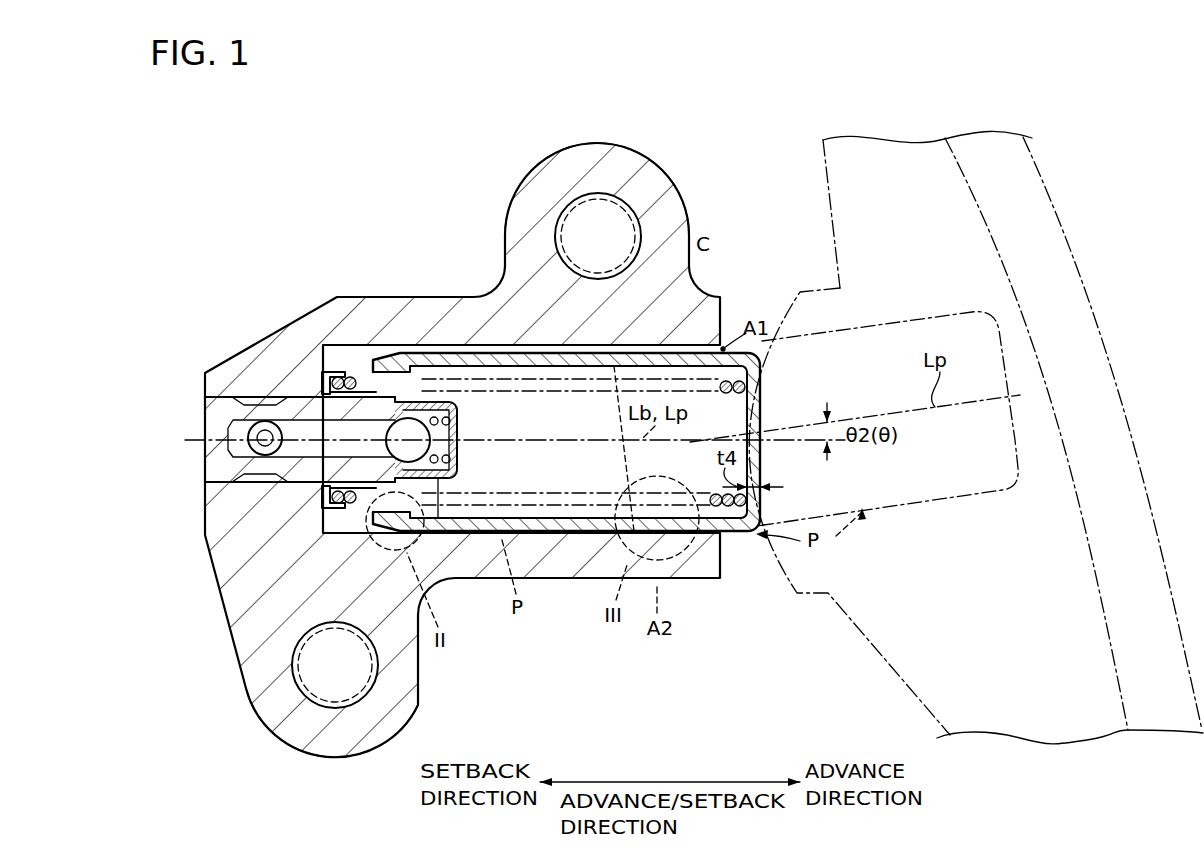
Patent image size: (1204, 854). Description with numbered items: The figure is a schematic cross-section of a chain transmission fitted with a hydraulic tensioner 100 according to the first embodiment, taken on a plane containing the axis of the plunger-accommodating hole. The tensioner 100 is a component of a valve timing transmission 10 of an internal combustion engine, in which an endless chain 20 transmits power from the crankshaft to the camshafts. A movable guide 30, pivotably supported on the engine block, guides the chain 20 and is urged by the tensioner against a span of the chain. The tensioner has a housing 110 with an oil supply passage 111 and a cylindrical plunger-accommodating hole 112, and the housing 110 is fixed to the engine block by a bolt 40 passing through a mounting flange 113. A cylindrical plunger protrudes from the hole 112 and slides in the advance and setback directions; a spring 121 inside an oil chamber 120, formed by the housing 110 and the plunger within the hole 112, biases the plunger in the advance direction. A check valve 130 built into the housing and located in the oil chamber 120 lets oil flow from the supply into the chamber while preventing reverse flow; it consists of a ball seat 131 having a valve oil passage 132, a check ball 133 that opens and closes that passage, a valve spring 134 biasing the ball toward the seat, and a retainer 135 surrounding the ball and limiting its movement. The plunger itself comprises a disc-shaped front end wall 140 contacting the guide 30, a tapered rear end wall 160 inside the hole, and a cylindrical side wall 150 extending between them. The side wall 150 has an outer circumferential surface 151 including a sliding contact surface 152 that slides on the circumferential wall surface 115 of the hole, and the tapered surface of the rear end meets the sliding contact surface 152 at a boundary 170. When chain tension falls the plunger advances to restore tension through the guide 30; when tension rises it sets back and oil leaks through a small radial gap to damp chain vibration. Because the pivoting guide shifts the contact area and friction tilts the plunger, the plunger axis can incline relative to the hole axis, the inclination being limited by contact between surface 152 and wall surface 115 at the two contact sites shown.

The valve timing transmission 10 is at (738, 112).
The endless chain 20 is at (1085, 290).
The movable guide 30 is at (882, 657).
The bolt 40 is at (587, 195).
The hydraulic tensioner 100 is at (350, 130).
The housing 110 is at (597, 590).
The oil supply passage 111 is at (253, 385).
The plunger-accommodating hole 112 is at (342, 521).
The mounting flange 113 is at (623, 158).
The circumferential wall surface 115 is at (478, 358).
The oil chamber 120 is at (745, 425).
The spring 121 is at (728, 512).
The check valve 130 is at (470, 465).
The ball seat 131 is at (315, 484).
The valve oil passage 132 is at (300, 395).
The check ball 133 is at (386, 362).
The valve spring 134 is at (458, 418).
The retainer 135 is at (438, 517).
The front end wall 140 is at (748, 400).
The side wall 150 is at (560, 524).
The outer circumferential surface 151 is at (652, 350).
The sliding contact surface 152 is at (678, 350).
The rear end wall 160 is at (372, 347).
The boundary 170 is at (418, 392).